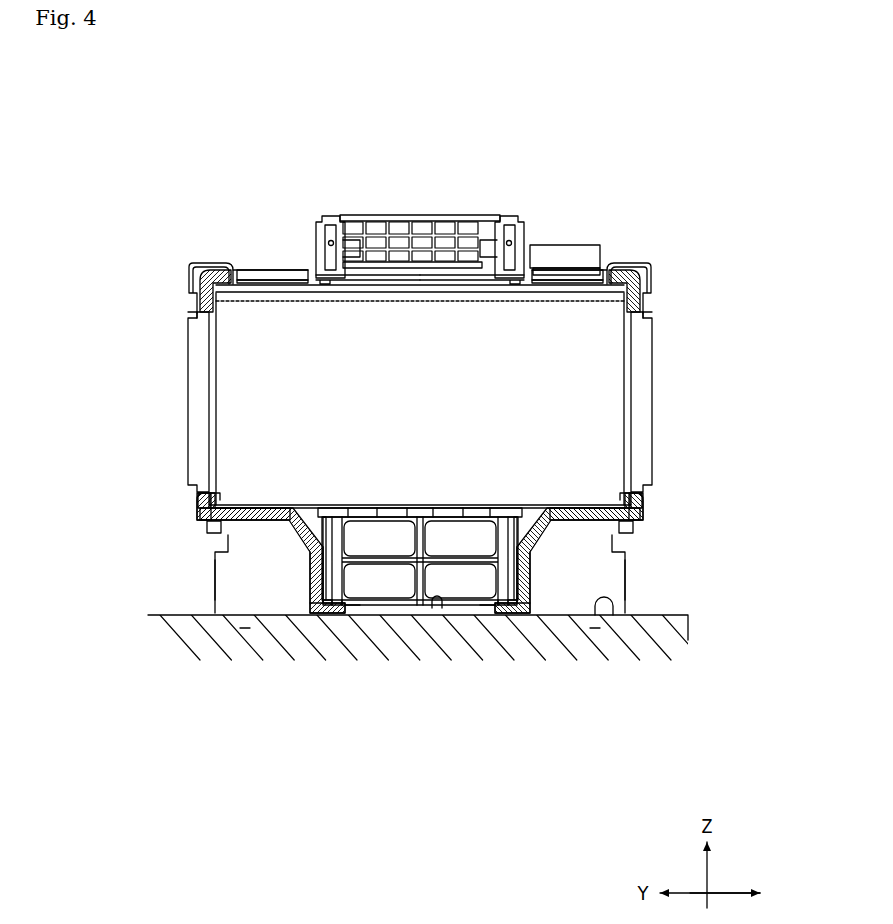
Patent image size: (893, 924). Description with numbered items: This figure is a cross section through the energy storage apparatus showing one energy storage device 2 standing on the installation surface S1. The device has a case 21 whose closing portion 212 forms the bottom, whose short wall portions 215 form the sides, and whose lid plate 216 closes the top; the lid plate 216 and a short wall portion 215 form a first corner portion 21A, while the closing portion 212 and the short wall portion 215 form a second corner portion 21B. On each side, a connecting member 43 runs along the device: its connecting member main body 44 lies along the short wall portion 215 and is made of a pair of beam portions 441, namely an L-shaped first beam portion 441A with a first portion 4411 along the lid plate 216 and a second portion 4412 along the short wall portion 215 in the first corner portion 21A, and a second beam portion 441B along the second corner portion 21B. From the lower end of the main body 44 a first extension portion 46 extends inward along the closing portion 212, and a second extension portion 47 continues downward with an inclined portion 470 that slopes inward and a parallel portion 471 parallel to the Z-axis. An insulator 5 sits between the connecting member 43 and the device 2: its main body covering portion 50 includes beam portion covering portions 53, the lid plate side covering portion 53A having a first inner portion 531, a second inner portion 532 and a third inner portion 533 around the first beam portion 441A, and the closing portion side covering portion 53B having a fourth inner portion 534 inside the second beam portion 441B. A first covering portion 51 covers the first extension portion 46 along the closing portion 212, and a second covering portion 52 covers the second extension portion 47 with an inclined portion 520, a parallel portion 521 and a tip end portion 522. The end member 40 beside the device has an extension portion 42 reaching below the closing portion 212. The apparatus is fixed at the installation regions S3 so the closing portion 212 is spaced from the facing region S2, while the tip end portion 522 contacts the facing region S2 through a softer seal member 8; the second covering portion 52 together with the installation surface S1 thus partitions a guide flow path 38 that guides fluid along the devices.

The energy storage device 2 is at (298, 262).
The insulator 5 is at (183, 289).
The seal member 8 is at (313, 618).
The case 21 is at (633, 374).
The first corner portion 21A is at (205, 304).
The second corner portion 21B is at (215, 532).
The guide flow path 38 is at (405, 582).
The end member 40 is at (418, 619).
The extension portion 42 is at (216, 596).
The connecting member 43 is at (198, 523).
The connecting member main body 44 is at (200, 507).
The first extension portion 46 is at (226, 565).
The second extension portion 47 is at (290, 736).
The main body covering portion 50 is at (200, 497).
The first covering portion 51 is at (323, 538).
The second covering portion 52 is at (300, 784).
The beam portion covering portion 53 is at (423, 325).
The lid plate side covering portion 53A is at (207, 176).
The closing portion side covering portion 53B is at (423, 462).
The closing portion 212 is at (422, 510).
The short wall portion 215 is at (210, 375).
The lid plate 216 is at (480, 270).
The beam portion 441 is at (420, 304).
The first beam portion 441A is at (228, 117).
The second beam portion 441B is at (203, 511).
The inclined portion 470 is at (292, 548).
The parallel portion 471 is at (312, 572).
The inclined portion 520 is at (346, 612).
The parallel portion 521 is at (337, 612).
The tip end portion 522 is at (328, 612).
The first inner portion 531 is at (222, 305).
The second inner portion 532 is at (243, 268).
The third inner portion 533 is at (225, 311).
The fourth inner portion 534 is at (200, 492).
The first portion 4411 is at (216, 272).
The second portion 4412 is at (197, 267).
The installation surface S1 is at (672, 617).
The facing region S2 is at (437, 608).
The installation region S3 is at (247, 630).